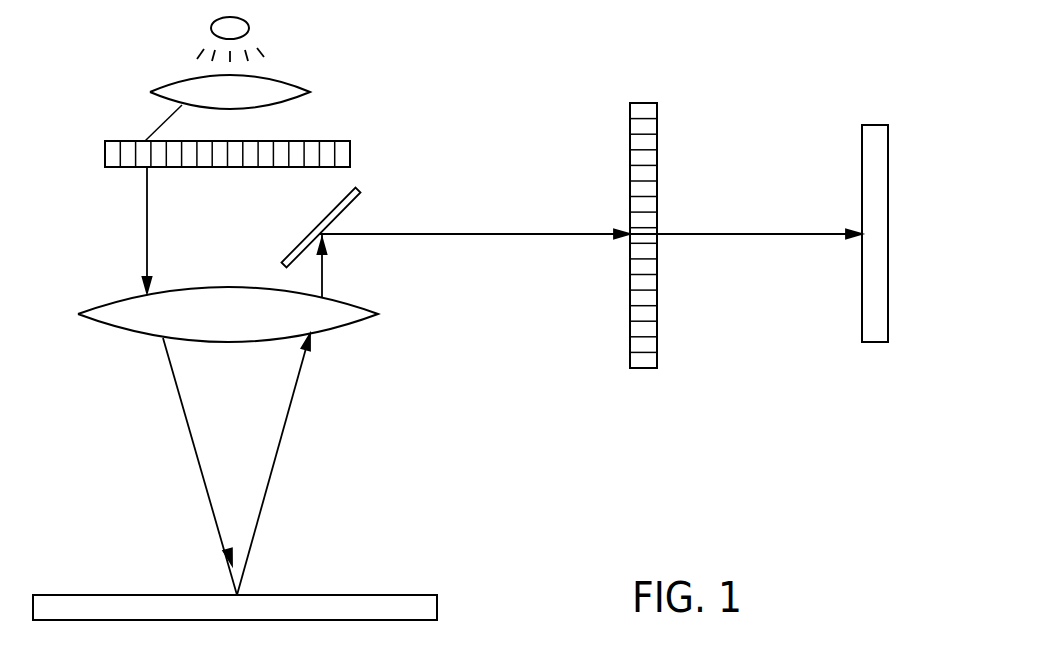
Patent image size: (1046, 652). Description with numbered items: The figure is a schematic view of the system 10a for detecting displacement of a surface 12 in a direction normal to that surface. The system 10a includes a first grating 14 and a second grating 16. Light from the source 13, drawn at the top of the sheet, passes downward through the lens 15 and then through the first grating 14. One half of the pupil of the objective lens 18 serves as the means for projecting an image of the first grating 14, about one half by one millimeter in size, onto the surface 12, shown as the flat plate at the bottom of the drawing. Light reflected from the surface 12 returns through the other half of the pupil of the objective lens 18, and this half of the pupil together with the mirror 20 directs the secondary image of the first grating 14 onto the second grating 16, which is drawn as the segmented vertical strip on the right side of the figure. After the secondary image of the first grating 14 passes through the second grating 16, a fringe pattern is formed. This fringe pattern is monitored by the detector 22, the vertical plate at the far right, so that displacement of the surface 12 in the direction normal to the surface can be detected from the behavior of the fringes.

The system 10a is at (455, 28).
The surface 12 is at (340, 595).
The source 13 is at (212, 28).
The first grating 14 is at (105, 153).
The lens 15 is at (150, 90).
The second grating 16 is at (641, 102).
The objective lens 18 is at (345, 323).
The mirror 20 is at (358, 187).
The detector 22 is at (873, 125).